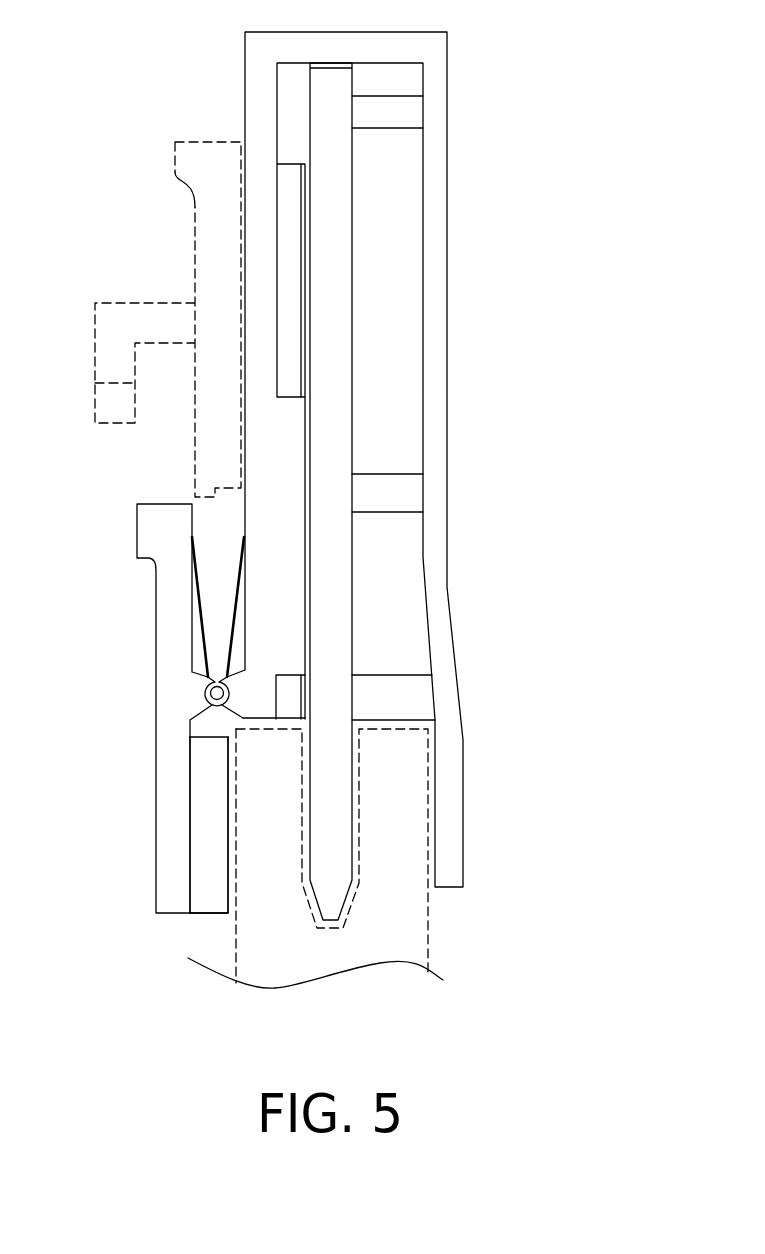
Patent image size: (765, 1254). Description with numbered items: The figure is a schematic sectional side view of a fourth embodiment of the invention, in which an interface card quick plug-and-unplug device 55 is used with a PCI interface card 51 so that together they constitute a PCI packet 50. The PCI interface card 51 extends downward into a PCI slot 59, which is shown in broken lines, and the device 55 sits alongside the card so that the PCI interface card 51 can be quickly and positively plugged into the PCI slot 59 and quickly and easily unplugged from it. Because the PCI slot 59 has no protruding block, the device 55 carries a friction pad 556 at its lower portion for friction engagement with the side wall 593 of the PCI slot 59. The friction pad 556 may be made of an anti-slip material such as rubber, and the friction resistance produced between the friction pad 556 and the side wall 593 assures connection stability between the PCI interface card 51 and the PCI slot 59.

The PCI packet 50 is at (110, 83).
The PCI interface card 51 is at (343, 443).
The interface card quick plug-and-unplug device 55 is at (138, 687).
The friction pad 556 is at (203, 820).
The PCI slot 59 is at (433, 923).
The side wall 593 is at (235, 945).